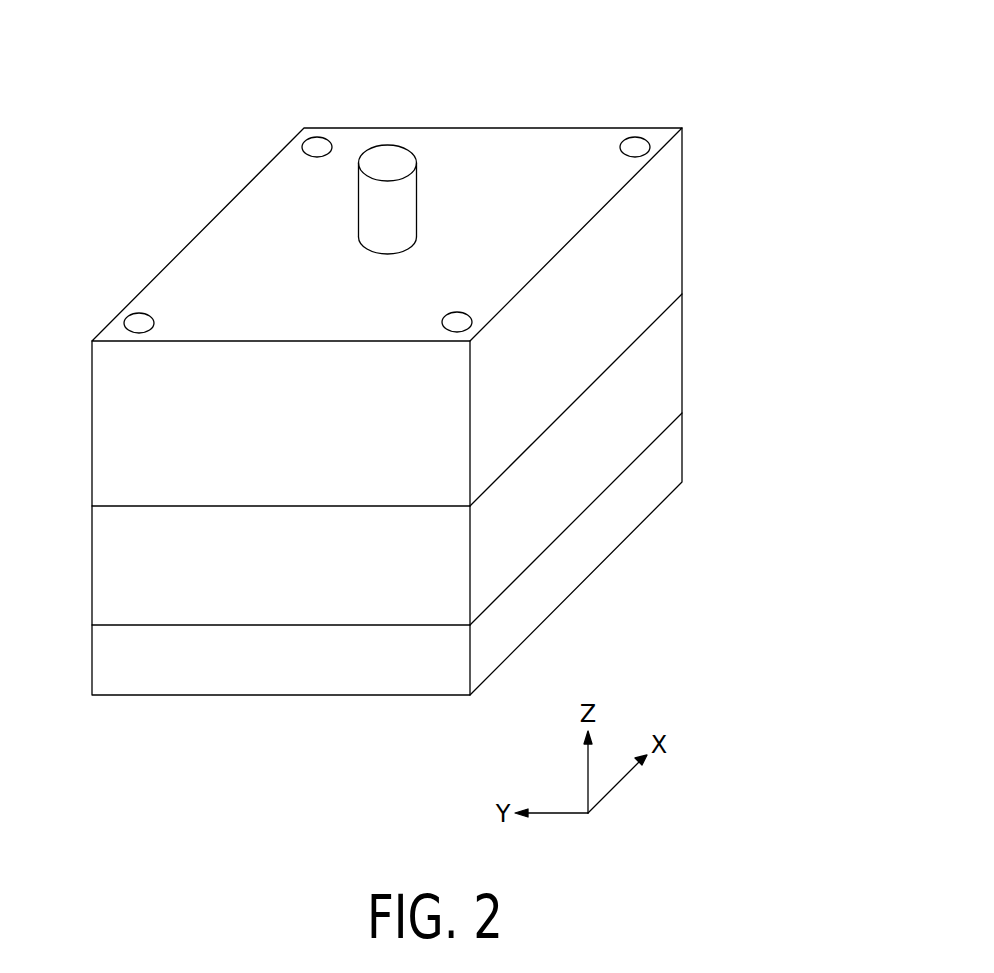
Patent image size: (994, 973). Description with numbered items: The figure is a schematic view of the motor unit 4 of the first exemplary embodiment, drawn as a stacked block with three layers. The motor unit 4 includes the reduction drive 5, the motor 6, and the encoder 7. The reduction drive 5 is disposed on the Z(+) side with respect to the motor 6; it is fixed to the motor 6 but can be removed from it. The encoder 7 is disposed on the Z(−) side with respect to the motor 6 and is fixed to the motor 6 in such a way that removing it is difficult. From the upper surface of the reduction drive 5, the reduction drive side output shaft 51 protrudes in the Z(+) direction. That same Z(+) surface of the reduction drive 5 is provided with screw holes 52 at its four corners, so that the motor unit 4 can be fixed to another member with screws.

The motor unit 4 is at (740, 68).
The reduction drive 5 is at (682, 243).
The motor 6 is at (682, 363).
The encoder 7 is at (682, 457).
The reduction drive side output shaft 51 is at (405, 150).
The screw holes 52 is at (637, 137).